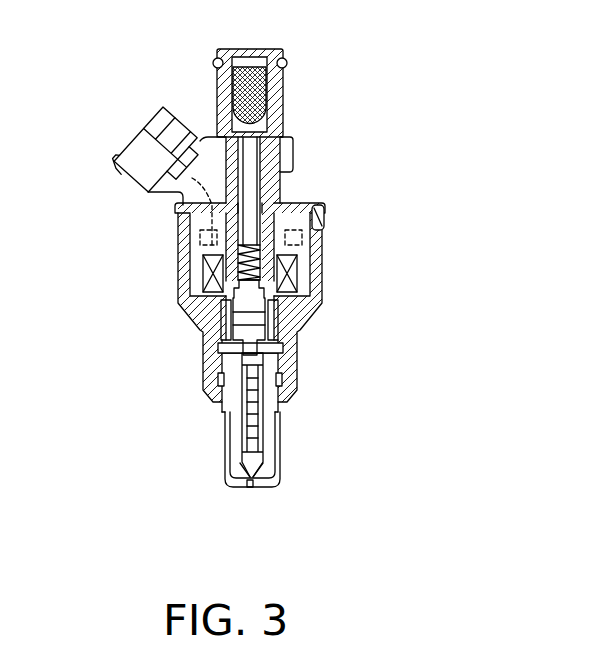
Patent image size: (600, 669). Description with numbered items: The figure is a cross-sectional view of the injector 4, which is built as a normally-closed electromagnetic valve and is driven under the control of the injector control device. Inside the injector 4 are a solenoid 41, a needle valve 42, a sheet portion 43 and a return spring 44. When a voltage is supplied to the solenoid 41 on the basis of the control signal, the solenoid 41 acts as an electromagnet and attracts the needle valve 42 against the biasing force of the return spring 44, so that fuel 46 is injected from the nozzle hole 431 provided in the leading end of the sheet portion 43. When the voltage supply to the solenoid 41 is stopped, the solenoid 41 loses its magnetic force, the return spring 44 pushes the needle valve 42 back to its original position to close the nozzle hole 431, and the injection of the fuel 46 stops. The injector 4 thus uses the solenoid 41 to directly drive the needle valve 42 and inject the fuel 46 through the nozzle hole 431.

The injector 4 is at (358, 52).
The solenoid 41 is at (207, 267).
The needle valve 42 is at (252, 400).
The sheet portion 43 is at (227, 480).
The nozzle hole 431 is at (262, 496).
The return spring 44 is at (245, 267).
The fuel 46 is at (242, 421).